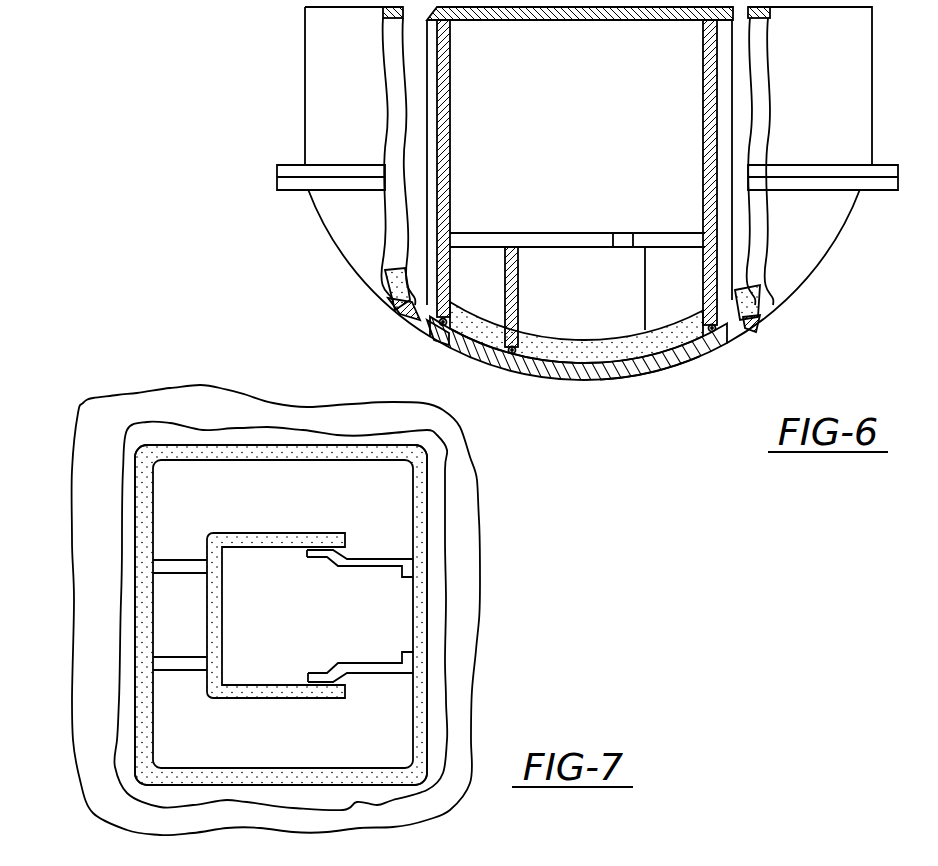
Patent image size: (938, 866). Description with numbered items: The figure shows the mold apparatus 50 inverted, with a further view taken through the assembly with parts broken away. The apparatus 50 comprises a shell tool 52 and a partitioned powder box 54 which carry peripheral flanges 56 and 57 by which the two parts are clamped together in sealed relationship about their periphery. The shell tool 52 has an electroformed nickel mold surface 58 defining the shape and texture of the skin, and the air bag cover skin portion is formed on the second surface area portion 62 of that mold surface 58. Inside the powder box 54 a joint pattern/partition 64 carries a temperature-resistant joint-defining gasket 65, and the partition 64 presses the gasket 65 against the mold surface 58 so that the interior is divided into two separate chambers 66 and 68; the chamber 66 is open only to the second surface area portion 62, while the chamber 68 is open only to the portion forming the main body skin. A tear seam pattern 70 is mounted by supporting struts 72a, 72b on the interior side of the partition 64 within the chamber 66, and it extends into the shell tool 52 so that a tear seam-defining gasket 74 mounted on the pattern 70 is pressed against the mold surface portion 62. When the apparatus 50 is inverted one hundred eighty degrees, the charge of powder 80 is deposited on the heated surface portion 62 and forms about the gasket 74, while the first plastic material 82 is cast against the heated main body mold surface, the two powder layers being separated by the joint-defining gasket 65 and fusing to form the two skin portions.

In FIG. 6, the apparatus 50 is at (277, 133).
In FIG. 7, the apparatus 50 is at (480, 500).
In FIG. 6, the shell tool 52 is at (697, 362).
In FIG. 7, the shell tool 52 is at (475, 538).
In FIG. 6, the partitioned powder box 54 is at (305, 73).
In FIG. 6, the peripheral flange 56 is at (867, 190).
In FIG. 6, the peripheral flange 57 is at (835, 167).
In FIG. 6, the mold surface 58 is at (468, 336).
In FIG. 6, the second surface area portion 62 is at (593, 362).
In FIG. 7, the joint pattern/partition 64 is at (153, 510).
In FIG. 7, the joint-defining gasket 65 is at (215, 447).
In FIG. 6, the chamber 66 is at (575, 208).
In FIG. 7, the chamber 66 is at (275, 620).
In FIG. 6, the chamber 68 is at (397, 243).
In FIG. 7, the chamber 68 is at (437, 642).
In FIG. 7, the tear seam pattern 70 is at (318, 528).
In FIG. 6, the supporting strut 72a is at (478, 237).
In FIG. 7, the supporting strut 72a is at (180, 575).
In FIG. 6, the supporting strut 72b is at (655, 245).
In FIG. 7, the supporting strut 72b is at (372, 563).
In FIG. 6, the tear seam-defining gasket 74 is at (522, 315).
In FIG. 7, the tear seam-defining gasket 74 is at (310, 700).
In FIG. 6, the charge of powder 80 is at (657, 365).
In FIG. 6, the charge of first plastic material 82 is at (430, 318).